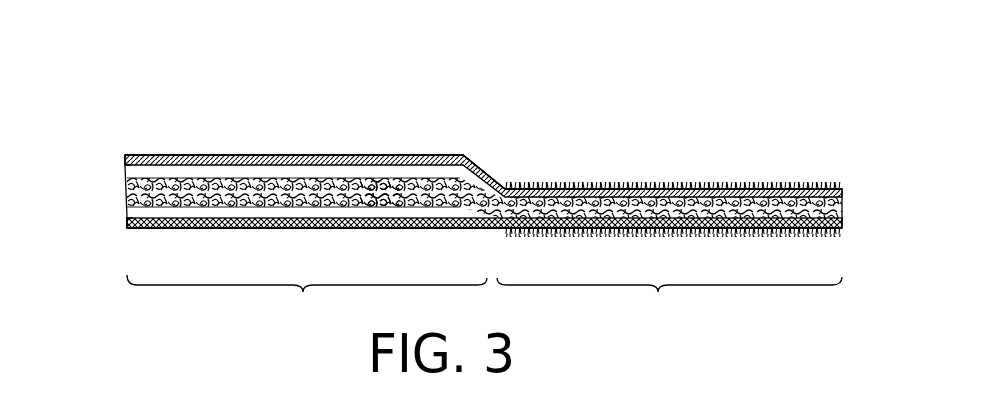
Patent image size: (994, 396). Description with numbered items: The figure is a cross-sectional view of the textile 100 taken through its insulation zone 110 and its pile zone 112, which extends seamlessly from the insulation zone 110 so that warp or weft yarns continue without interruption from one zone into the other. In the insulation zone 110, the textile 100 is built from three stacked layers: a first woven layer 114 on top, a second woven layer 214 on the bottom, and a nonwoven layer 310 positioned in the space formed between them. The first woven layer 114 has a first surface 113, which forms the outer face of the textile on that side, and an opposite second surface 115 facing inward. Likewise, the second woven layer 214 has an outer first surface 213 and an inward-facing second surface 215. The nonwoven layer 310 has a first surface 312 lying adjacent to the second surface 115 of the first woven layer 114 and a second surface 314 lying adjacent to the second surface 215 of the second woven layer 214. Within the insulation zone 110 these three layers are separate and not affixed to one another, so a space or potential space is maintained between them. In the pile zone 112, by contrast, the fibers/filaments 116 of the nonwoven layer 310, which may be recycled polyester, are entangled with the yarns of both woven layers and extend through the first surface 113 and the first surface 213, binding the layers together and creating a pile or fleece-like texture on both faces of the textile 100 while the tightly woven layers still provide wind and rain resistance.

The textile 100 is at (775, 115).
The insulation zone 110 is at (307, 297).
The pile zone 112 is at (669, 298).
The first surface of first woven layer 113 is at (158, 155).
The first woven layer 114 is at (125, 156).
The second surface of first woven layer 115 is at (124, 168).
The fibers/filaments 116 is at (380, 182).
The first surface of second woven layer 213 is at (160, 229).
The second woven layer 214 is at (126, 229).
The second surface of second woven layer 215 is at (126, 219).
The nonwoven layer 310 is at (125, 190).
The first surface of nonwoven layer 312 is at (272, 178).
The second surface of nonwoven layer 314 is at (273, 208).